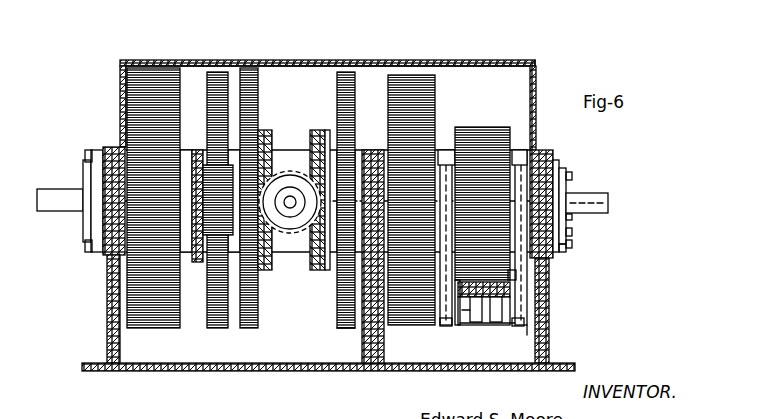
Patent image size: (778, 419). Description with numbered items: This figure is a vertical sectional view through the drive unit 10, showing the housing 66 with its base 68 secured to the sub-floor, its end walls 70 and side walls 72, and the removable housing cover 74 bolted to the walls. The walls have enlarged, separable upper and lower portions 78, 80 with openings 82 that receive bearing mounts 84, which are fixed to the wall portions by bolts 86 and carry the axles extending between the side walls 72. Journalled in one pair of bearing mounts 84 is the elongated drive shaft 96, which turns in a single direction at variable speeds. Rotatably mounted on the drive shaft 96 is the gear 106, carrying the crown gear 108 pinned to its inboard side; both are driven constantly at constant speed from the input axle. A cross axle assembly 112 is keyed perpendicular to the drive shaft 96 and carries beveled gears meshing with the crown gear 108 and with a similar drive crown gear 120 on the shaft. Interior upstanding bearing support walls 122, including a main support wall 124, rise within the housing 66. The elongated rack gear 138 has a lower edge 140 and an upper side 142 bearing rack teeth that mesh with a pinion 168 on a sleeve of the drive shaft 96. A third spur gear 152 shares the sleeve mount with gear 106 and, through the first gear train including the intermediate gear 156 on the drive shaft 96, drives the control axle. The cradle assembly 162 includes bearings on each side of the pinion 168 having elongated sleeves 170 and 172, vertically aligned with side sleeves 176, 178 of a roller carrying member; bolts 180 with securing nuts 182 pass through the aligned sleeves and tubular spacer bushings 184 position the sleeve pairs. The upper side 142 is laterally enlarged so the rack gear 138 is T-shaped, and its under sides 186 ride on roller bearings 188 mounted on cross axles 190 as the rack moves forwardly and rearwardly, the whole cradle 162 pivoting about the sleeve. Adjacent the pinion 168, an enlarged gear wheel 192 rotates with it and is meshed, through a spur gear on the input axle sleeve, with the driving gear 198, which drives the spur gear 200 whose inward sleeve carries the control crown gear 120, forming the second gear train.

The drive unit 10 is at (466, 44).
The housing 66 is at (508, 48).
The base 68 is at (242, 371).
The end walls 70 is at (470, 350).
The side walls 72 is at (107, 310).
The housing cover 74 is at (345, 60).
The upper portion 78 is at (560, 162).
The lower portion 80 is at (567, 252).
The openings 82 is at (590, 222).
The bearing mounts 84 is at (568, 178).
The bolts 86 is at (568, 262).
The drive shaft 96 is at (610, 198).
The gear 106 is at (258, 325).
The crown gear 108 is at (265, 265).
The cross axle assembly 112 is at (295, 182).
The drive crown gear 120 is at (328, 136).
The bearing support walls 122 is at (200, 347).
The main support wall 124 is at (365, 350).
The rack gear 138 is at (490, 300).
The lower edge 140 is at (470, 305).
The upper side 142 is at (415, 290).
The third spur gear 152 is at (210, 170).
The intermediate gear 156 is at (163, 315).
The cradle assembly 162 is at (522, 339).
The pinion 168 is at (480, 135).
The sleeve 170 is at (448, 172).
The sleeve 172 is at (545, 180).
The side sleeve 176 is at (447, 330).
The side sleeve 178 is at (530, 335).
The bolts 180 is at (578, 183).
The securing nuts 182 is at (522, 160).
The spacer bushings 184 is at (563, 248).
The under sides 186 is at (508, 290).
The roller bearings 188 is at (505, 300).
The cross axles 190 is at (468, 310).
The gear wheel 192 is at (407, 80).
The driving gear 198 is at (348, 330).
The spur gear 200 is at (347, 227).